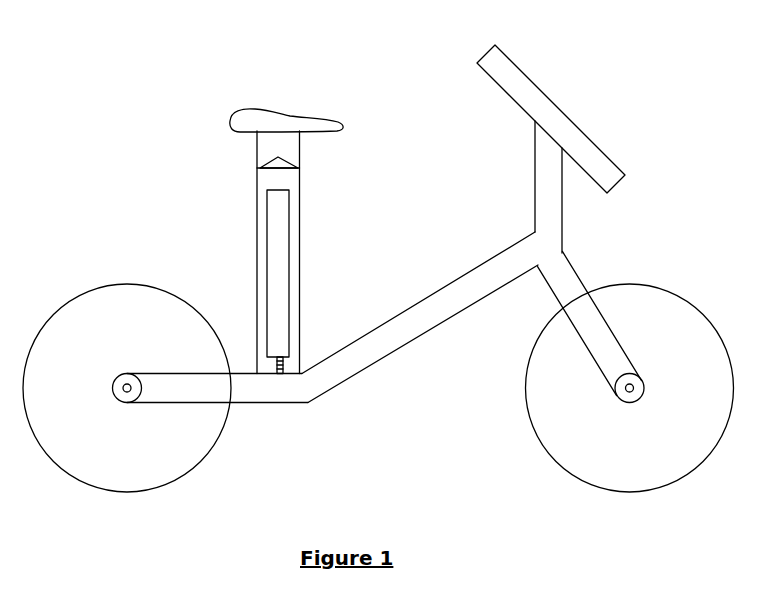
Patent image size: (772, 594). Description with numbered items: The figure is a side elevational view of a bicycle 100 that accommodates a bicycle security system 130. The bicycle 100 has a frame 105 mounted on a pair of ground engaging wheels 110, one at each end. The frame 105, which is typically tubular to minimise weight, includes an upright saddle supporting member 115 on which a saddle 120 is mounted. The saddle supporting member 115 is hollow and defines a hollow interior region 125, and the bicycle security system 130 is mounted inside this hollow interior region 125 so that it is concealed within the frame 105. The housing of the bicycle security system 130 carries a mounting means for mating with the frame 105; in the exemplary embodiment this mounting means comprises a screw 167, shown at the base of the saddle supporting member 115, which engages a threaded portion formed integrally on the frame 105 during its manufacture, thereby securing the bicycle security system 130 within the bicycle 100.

The bicycle 100 is at (632, 110).
The frame 105 is at (548, 260).
The ground engaging wheels 110 is at (163, 462).
The saddle supporting member 115 is at (258, 268).
The saddle 120 is at (263, 120).
The hollow interior region 125 is at (287, 180).
The bicycle security system 130 is at (280, 238).
The screw 167 is at (281, 358).